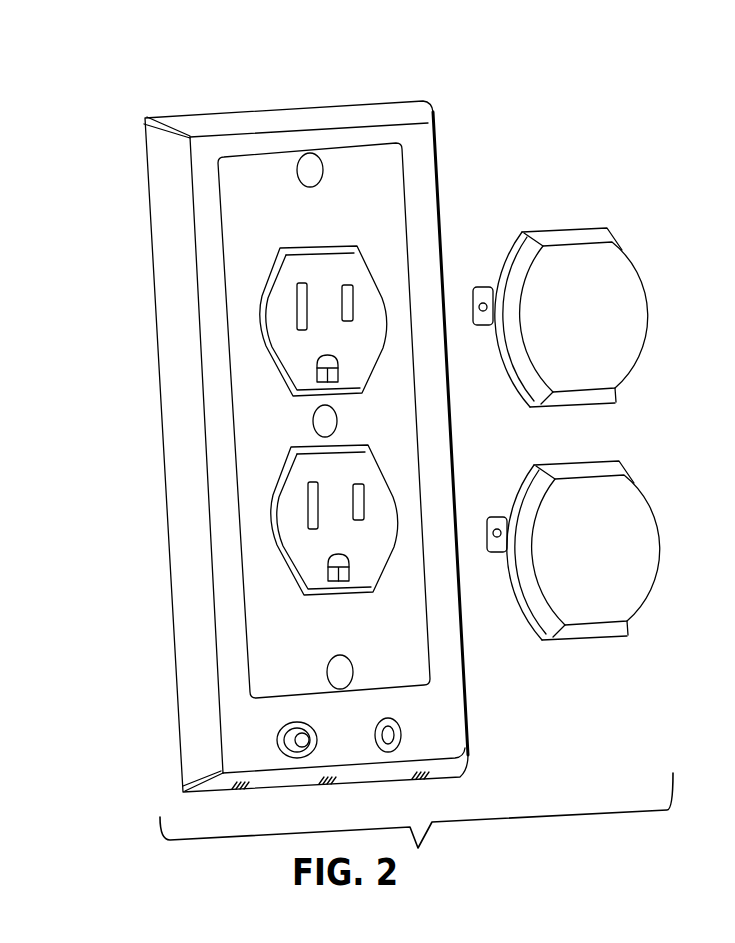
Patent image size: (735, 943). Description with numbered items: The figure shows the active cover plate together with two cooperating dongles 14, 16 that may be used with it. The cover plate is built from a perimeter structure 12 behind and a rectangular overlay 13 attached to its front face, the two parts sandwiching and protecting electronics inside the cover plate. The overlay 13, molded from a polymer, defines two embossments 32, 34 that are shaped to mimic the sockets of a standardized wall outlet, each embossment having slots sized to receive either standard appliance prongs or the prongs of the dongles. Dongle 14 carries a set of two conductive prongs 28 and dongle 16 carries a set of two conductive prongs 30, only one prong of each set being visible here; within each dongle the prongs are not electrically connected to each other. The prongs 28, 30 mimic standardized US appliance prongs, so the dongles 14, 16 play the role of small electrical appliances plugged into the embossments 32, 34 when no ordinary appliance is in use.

The perimeter structure 12 is at (412, 122).
The overlay 13 is at (407, 658).
The dongle 14 is at (612, 270).
The dongle 16 is at (630, 507).
The prongs 28 is at (485, 283).
The prongs 30 is at (493, 513).
The embossment 32 is at (295, 358).
The embossment 34 is at (303, 563).